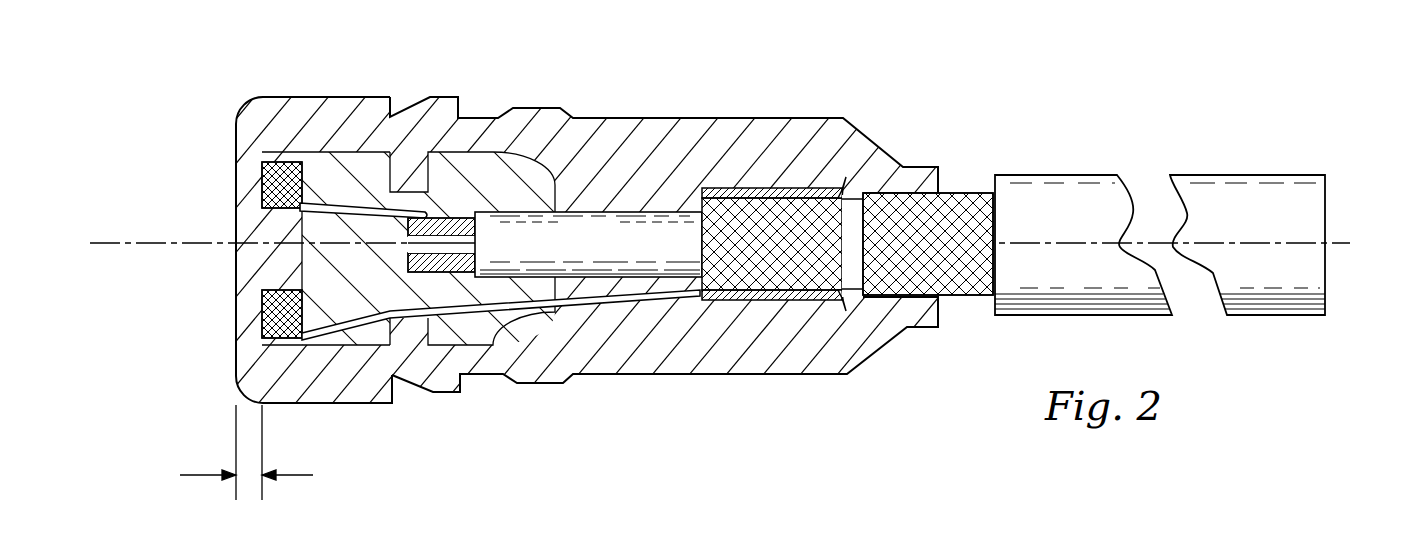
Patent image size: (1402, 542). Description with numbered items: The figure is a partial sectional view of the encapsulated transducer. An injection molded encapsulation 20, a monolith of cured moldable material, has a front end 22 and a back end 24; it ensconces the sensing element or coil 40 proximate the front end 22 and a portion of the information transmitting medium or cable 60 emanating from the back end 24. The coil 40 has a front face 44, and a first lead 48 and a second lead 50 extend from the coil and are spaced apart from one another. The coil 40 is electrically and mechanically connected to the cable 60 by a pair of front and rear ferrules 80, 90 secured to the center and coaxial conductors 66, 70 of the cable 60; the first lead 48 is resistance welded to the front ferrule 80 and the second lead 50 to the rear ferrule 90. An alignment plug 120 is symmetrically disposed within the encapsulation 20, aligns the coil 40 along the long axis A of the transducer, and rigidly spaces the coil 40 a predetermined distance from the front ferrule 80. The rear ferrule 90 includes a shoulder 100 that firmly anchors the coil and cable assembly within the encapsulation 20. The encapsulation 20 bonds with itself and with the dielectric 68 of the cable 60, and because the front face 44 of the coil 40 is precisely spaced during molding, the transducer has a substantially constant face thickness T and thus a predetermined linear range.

The encapsulation 20 is at (587, 155).
The front end 22 is at (240, 112).
The back end 24 is at (940, 195).
The sensing element 40 is at (262, 316).
The front face 44 is at (262, 175).
The first lead 48 is at (329, 203).
The second lead 50 is at (638, 303).
The information transmitting medium 60 is at (1260, 164).
The center conductor 66 is at (442, 251).
The dielectric 68 is at (552, 253).
The coaxial conductor 70 is at (762, 256).
The front ferrule 80 is at (442, 217).
The rear ferrule 90 is at (728, 195).
The shoulder 100 is at (842, 185).
The alignment plug 120 is at (355, 253).
The long axis A is at (1338, 245).
The face thickness T is at (250, 490).